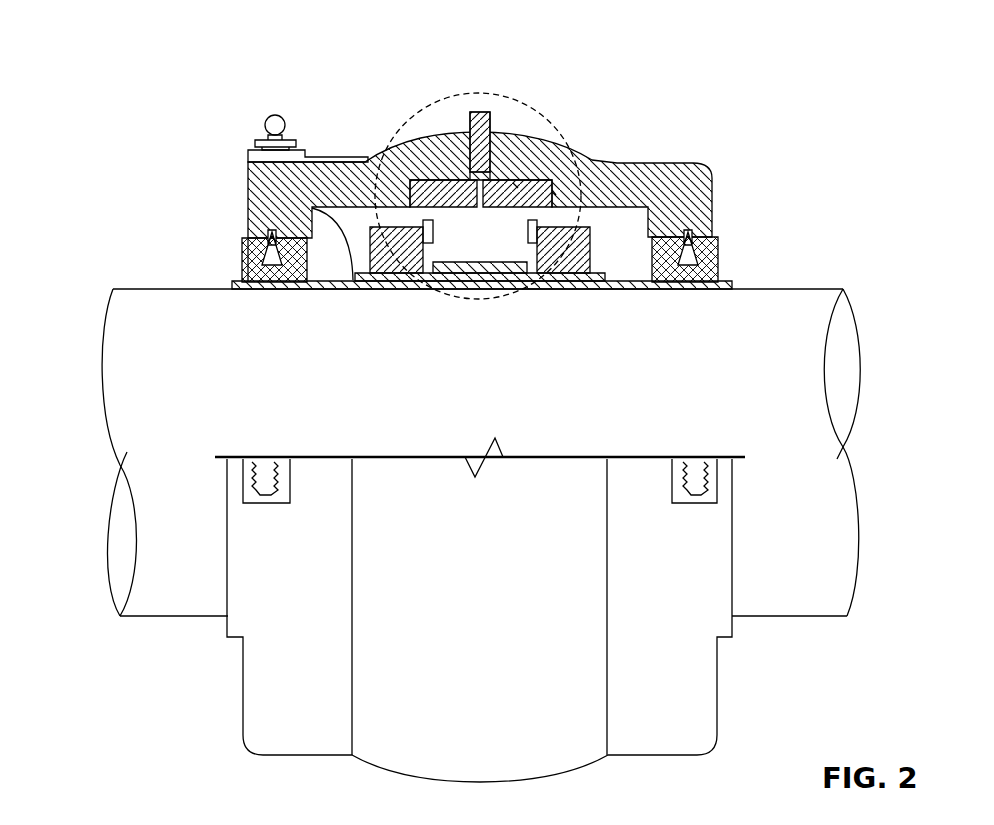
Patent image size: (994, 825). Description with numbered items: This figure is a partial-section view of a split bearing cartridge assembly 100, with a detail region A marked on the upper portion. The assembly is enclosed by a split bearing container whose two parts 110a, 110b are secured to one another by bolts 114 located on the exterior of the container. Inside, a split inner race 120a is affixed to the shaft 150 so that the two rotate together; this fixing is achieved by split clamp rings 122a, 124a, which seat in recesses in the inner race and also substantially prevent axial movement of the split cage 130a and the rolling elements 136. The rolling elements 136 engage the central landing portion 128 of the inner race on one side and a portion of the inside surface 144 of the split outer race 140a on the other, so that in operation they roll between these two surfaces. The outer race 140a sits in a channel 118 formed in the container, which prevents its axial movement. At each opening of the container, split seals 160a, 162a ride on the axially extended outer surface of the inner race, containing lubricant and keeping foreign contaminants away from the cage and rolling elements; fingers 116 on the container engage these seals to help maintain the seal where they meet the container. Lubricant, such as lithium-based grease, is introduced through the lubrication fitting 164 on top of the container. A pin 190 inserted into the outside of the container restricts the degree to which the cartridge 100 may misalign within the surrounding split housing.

The split bearing cartridge assembly 100 is at (229, 39).
The split bearing container part 110a is at (593, 155).
The split bearing container part 110b is at (708, 722).
The bolt 114 is at (253, 477).
The finger 116 is at (272, 242).
The channel 118 is at (513, 183).
The split inner race part 120a is at (312, 208).
The split clamp ring component 122a is at (248, 152).
The split clamp ring component 124a is at (590, 240).
The central landing portion 128 is at (430, 235).
The split cage part 130a is at (537, 228).
The rolling element 136 is at (470, 222).
The split outer race part 140a is at (552, 190).
The inside surface 144 is at (450, 212).
The shaft 150 is at (127, 333).
The split seal 160a is at (242, 270).
The split seal 162a is at (718, 277).
The lubrication fitting 164 is at (265, 124).
The pin 190 is at (485, 113).
The detail area A is at (525, 100).